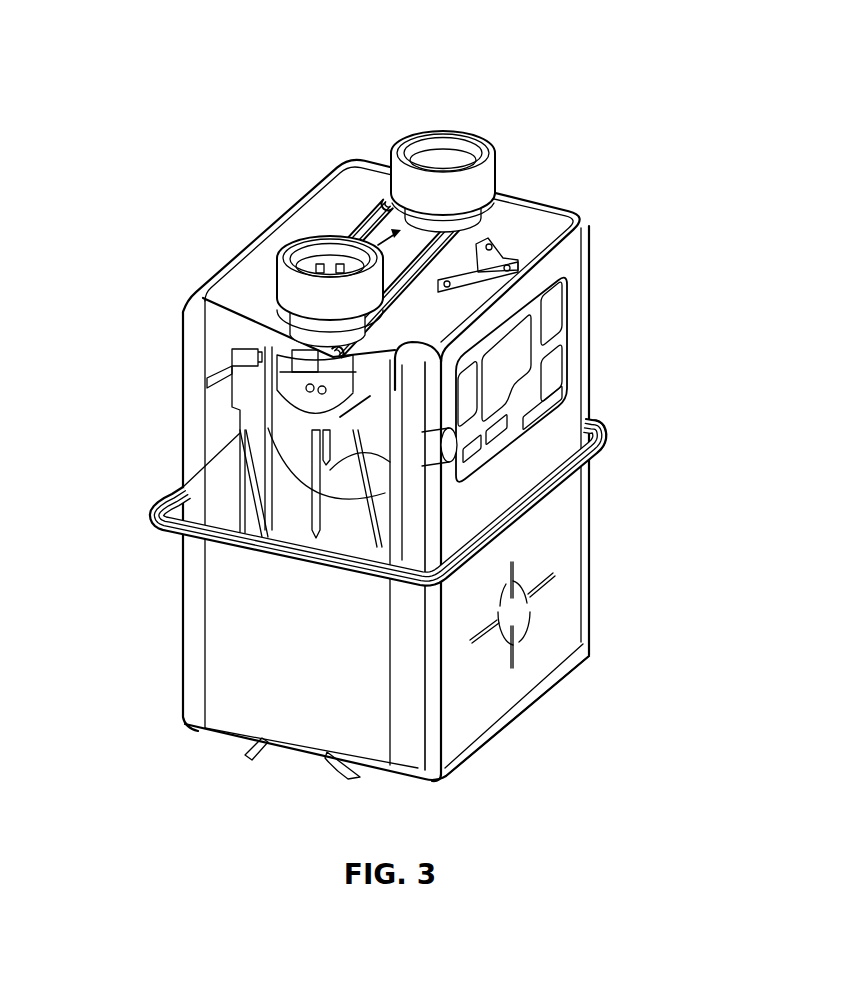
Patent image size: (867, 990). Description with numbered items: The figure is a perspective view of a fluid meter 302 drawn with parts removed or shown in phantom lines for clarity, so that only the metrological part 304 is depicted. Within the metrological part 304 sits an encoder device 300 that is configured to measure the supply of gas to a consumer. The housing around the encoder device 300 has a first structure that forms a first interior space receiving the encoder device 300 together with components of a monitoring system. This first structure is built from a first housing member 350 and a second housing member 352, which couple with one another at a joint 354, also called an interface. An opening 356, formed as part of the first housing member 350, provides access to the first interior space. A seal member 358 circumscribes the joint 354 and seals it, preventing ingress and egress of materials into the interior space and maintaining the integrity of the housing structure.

The fluid meter 302 is at (556, 78).
The encoder device 300 is at (378, 388).
The metrological part 304 is at (110, 772).
The first housing member 350 is at (688, 385).
The second housing member 352 is at (688, 668).
The joint 354 is at (618, 460).
The opening 356 is at (448, 447).
The seal member 358 is at (601, 448).